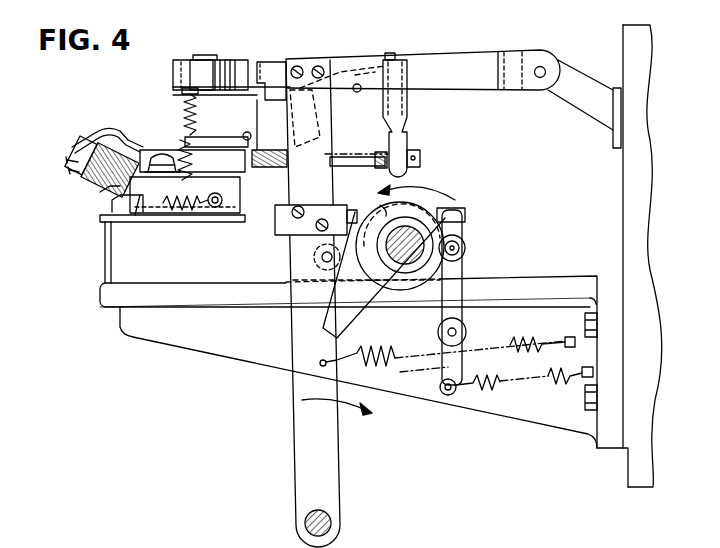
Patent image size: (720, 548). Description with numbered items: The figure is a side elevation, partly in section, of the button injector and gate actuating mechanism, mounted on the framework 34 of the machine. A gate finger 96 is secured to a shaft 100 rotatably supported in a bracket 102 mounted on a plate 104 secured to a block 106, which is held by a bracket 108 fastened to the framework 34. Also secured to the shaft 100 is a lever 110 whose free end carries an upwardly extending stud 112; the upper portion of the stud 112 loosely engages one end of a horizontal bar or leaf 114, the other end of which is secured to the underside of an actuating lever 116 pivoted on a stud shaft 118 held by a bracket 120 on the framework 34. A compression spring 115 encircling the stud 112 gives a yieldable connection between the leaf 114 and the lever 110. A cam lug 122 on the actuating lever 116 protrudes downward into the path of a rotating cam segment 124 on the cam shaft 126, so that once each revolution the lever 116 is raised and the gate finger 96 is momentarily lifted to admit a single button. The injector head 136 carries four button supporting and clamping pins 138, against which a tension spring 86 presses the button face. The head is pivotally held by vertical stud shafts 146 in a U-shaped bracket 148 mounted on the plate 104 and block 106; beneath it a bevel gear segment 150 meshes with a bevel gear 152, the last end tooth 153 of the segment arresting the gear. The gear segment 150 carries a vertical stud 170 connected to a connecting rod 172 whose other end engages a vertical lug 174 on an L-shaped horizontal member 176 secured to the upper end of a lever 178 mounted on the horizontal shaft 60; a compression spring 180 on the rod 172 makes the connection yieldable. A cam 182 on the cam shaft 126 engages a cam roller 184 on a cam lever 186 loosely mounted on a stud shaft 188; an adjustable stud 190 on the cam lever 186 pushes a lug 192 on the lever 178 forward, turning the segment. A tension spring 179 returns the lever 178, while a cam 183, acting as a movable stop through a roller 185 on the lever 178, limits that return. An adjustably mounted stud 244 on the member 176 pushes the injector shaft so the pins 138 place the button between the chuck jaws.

The framework 34 is at (640, 75).
The horizontal shaft 60 is at (332, 523).
The tension spring 86 is at (176, 216).
The gate finger 96 is at (85, 136).
The shaft 100 is at (250, 134).
The bracket 102 is at (246, 188).
The plate 104 is at (115, 224).
The block 106 is at (108, 268).
The bracket 108 is at (233, 340).
The lever 110 is at (236, 133).
The stud 112 is at (190, 90).
The horizontal bar or leaf 114 is at (252, 96).
The compression spring 115 is at (188, 108).
The actuating lever 116 is at (428, 60).
The stud shaft 118 is at (540, 80).
The bracket 120 is at (590, 85).
The cam lug 122 is at (406, 128).
The cam segment 124 is at (345, 312).
The cam shaft 126 is at (416, 262).
The injector head 136 is at (79, 177).
The button supporting and clamping pins 138 is at (70, 160).
The vertical stud shafts 146 is at (204, 55).
The U-shaped bracket 148 is at (183, 65).
The bevel gear segment 150 is at (115, 197).
The bevel gear 152 is at (99, 194).
The end tooth 153 is at (140, 216).
The vertical stud 170 is at (160, 150).
The connecting rod 172 is at (356, 164).
The vertical lug 174 is at (418, 152).
The L-shaped horizontal member 176 is at (338, 78).
The lever 178 is at (300, 438).
The tension spring 179 is at (535, 340).
The compression spring 180 is at (400, 186).
The cam 182 is at (413, 275).
The cam 183 is at (420, 215).
The cam roller 184 is at (466, 246).
The roller 185 is at (313, 258).
The cam lever 186 is at (457, 290).
The stud shaft 188 is at (467, 331).
The adjustable stud 190 is at (368, 203).
The lug 192 is at (284, 226).
The adjustably mounted stud 244 is at (358, 93).